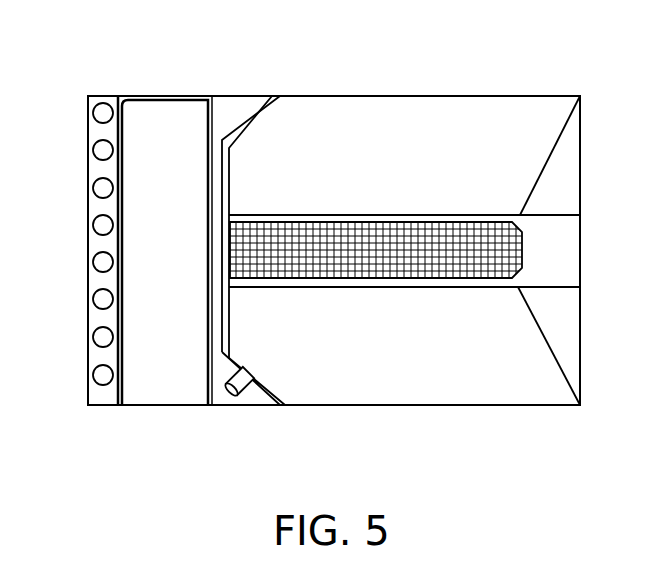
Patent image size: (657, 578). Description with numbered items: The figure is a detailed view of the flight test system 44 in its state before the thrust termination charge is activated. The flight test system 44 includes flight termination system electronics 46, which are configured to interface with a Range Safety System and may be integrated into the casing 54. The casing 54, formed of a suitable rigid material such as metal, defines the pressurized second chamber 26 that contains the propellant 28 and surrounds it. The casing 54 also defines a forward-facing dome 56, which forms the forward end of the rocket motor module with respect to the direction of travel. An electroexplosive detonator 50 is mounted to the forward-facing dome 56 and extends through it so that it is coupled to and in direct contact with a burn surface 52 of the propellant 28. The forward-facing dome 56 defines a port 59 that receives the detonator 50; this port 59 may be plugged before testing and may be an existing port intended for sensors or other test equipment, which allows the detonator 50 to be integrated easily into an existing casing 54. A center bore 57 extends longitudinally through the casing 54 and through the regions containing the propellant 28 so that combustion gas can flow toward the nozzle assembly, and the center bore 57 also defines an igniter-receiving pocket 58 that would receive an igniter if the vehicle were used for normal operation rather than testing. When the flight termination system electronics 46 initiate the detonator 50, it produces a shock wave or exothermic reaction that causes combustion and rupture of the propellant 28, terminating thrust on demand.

The flight test system 44 is at (110, 70).
The flight termination system electronics 46 is at (88, 205).
The electroexplosive detonator 50 is at (226, 380).
The casing 54 is at (226, 96).
The burn surface 52 is at (265, 392).
The port 59 is at (275, 372).
The forward-facing dome 56 is at (227, 315).
The pressurized second chamber 26 is at (395, 118).
The propellant 28 is at (540, 117).
The igniter-receiving pocket 58 is at (477, 243).
The center bore 57 is at (540, 243).